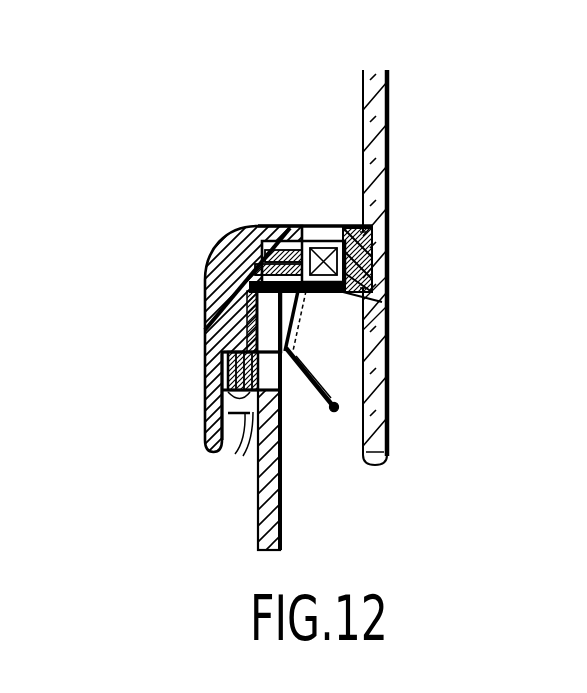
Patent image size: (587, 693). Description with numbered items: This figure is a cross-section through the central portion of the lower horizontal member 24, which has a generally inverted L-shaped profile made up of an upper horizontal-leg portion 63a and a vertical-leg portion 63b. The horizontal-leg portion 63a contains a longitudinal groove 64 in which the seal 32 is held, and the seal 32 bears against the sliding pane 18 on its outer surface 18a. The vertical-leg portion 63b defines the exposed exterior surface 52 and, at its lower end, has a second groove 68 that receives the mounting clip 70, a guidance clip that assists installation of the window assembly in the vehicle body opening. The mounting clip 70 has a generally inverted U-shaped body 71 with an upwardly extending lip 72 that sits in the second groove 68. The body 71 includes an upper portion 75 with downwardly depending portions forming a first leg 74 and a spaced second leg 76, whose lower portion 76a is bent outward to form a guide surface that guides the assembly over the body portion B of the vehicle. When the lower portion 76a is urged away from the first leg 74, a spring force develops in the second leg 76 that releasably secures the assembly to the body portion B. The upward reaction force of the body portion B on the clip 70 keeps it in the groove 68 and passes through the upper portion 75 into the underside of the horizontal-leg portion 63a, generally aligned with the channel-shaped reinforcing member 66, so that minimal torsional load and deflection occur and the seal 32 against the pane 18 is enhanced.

The sliding pane 18 is at (387, 146).
The outer surface 18a is at (358, 445).
The lower horizontal member 24 is at (213, 240).
The seal 32 is at (357, 227).
The exposed exterior surface 52 is at (207, 345).
The horizontal-leg portion 63a is at (257, 224).
The vertical-leg portion 63b is at (207, 285).
The longitudinal groove 64 is at (318, 227).
The channel-shaped reinforcing member 66 is at (207, 310).
The second groove 68 is at (207, 390).
The mounting clip 70 is at (243, 423).
The inverted U-shaped body 71 is at (302, 303).
The upwardly extending lip 72 is at (237, 453).
The first leg 74 is at (300, 337).
The upper portion 75 is at (292, 225).
The second leg 76 is at (300, 323).
The lower portion 76a is at (337, 403).
The body portion B is at (283, 465).